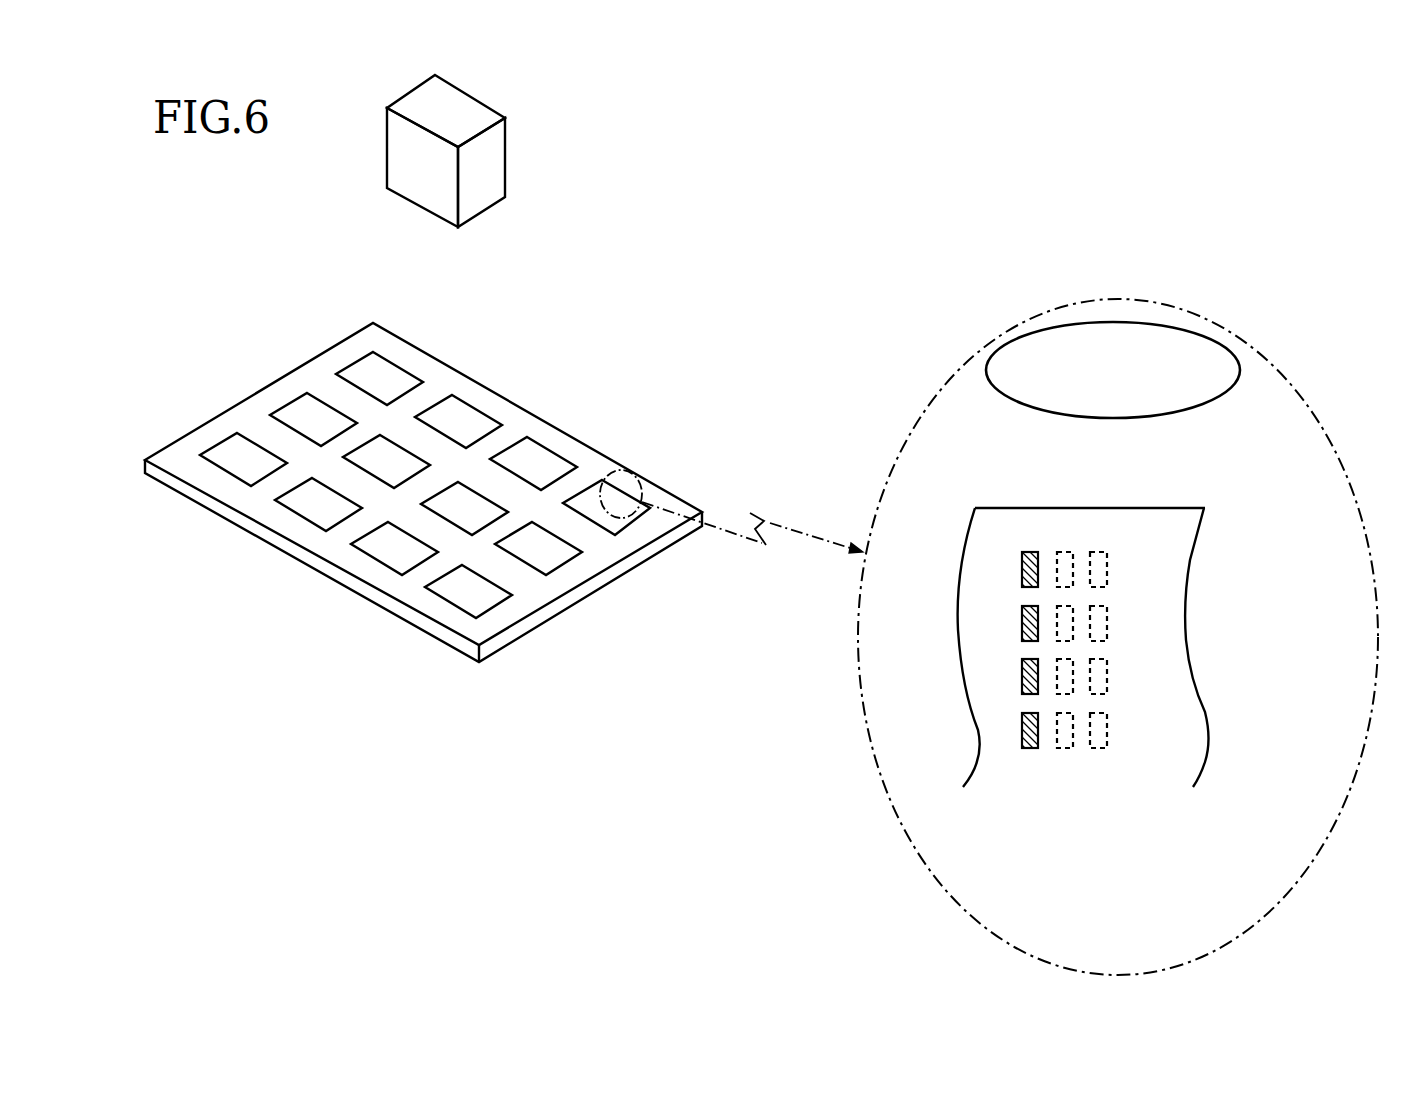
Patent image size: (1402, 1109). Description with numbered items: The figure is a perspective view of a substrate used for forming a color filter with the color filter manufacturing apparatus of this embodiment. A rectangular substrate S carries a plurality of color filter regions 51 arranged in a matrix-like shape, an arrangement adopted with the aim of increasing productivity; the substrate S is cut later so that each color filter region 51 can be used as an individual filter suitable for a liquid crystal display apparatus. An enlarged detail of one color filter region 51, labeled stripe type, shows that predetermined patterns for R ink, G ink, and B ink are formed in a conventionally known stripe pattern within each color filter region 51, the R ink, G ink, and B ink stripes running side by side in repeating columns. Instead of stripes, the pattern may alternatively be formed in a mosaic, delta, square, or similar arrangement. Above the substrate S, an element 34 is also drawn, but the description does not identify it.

The ink-jet head 34 is at (487, 173).
The color filter region 51 is at (477, 483).
The substrate S is at (540, 630).
The R ink R is at (1022, 567).
The G ink G is at (1060, 543).
The B ink B is at (1093, 543).